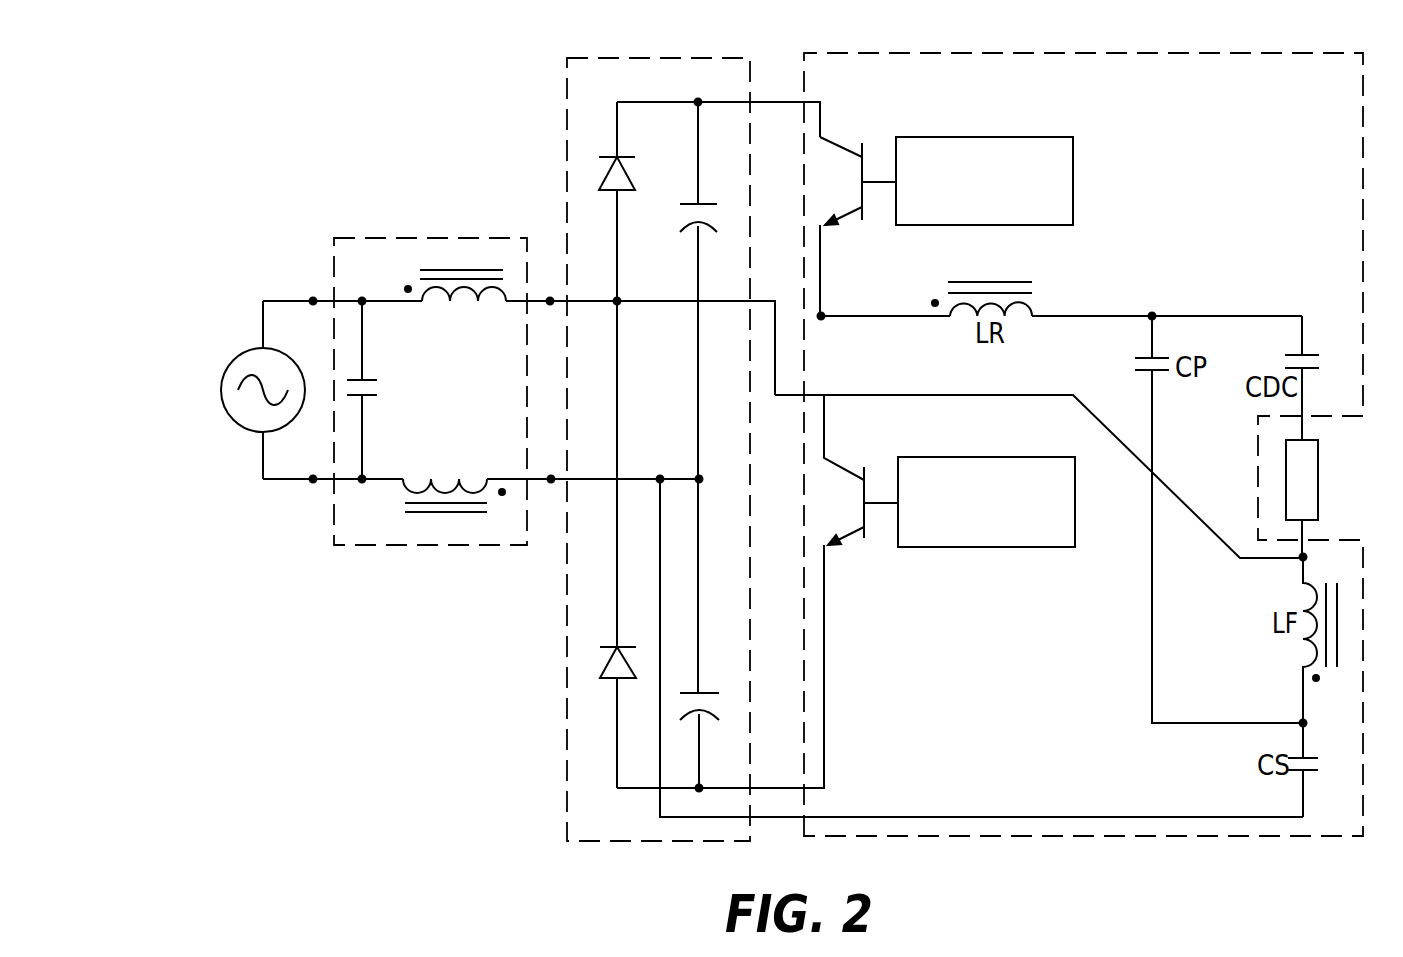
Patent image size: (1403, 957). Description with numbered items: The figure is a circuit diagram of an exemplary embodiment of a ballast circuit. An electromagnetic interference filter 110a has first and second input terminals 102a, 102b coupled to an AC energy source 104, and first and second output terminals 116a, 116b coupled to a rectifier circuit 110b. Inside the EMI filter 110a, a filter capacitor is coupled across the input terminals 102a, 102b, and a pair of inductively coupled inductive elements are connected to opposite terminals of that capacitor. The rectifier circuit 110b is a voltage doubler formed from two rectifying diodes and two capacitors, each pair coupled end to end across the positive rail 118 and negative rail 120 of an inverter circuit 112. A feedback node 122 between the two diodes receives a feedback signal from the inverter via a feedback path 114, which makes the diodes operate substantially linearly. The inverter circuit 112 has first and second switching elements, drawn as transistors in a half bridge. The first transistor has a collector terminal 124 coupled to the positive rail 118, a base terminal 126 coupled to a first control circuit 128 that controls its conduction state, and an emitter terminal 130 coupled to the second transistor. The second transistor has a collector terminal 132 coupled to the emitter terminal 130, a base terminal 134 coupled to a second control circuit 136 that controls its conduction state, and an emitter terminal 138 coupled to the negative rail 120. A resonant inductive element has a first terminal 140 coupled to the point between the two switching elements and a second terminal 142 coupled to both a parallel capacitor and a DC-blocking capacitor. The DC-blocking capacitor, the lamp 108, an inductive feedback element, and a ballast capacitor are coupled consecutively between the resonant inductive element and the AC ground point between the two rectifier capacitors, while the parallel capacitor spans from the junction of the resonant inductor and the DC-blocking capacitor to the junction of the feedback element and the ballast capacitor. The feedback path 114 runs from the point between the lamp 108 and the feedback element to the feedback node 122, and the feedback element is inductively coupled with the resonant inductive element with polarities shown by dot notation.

The first input terminal 102a is at (312, 300).
The second input terminal 102b is at (312, 482).
The AC energy source 104 is at (250, 353).
The lamp 108 is at (1320, 482).
The EMI filter 110a is at (410, 237).
The rectifier circuit 110b is at (678, 91).
The inverter circuit 112 is at (1195, 87).
The feedback path 114 is at (882, 395).
The first output terminal 116a is at (549, 300).
The second output terminal 116b is at (551, 482).
The positive rail 118 is at (818, 102).
The negative rail 120 is at (818, 788).
The feedback node 122 is at (619, 303).
The collector terminal 124 is at (822, 137).
The base terminal 126 is at (879, 184).
The first control circuit 128 is at (986, 137).
The emitter terminal 130 is at (843, 222).
The collector terminal 132 is at (826, 447).
The base terminal 134 is at (880, 503).
The second control circuit 136 is at (980, 548).
The emitter terminal 138 is at (845, 545).
The first terminal 140 is at (910, 318).
The second terminal 142 is at (1110, 318).